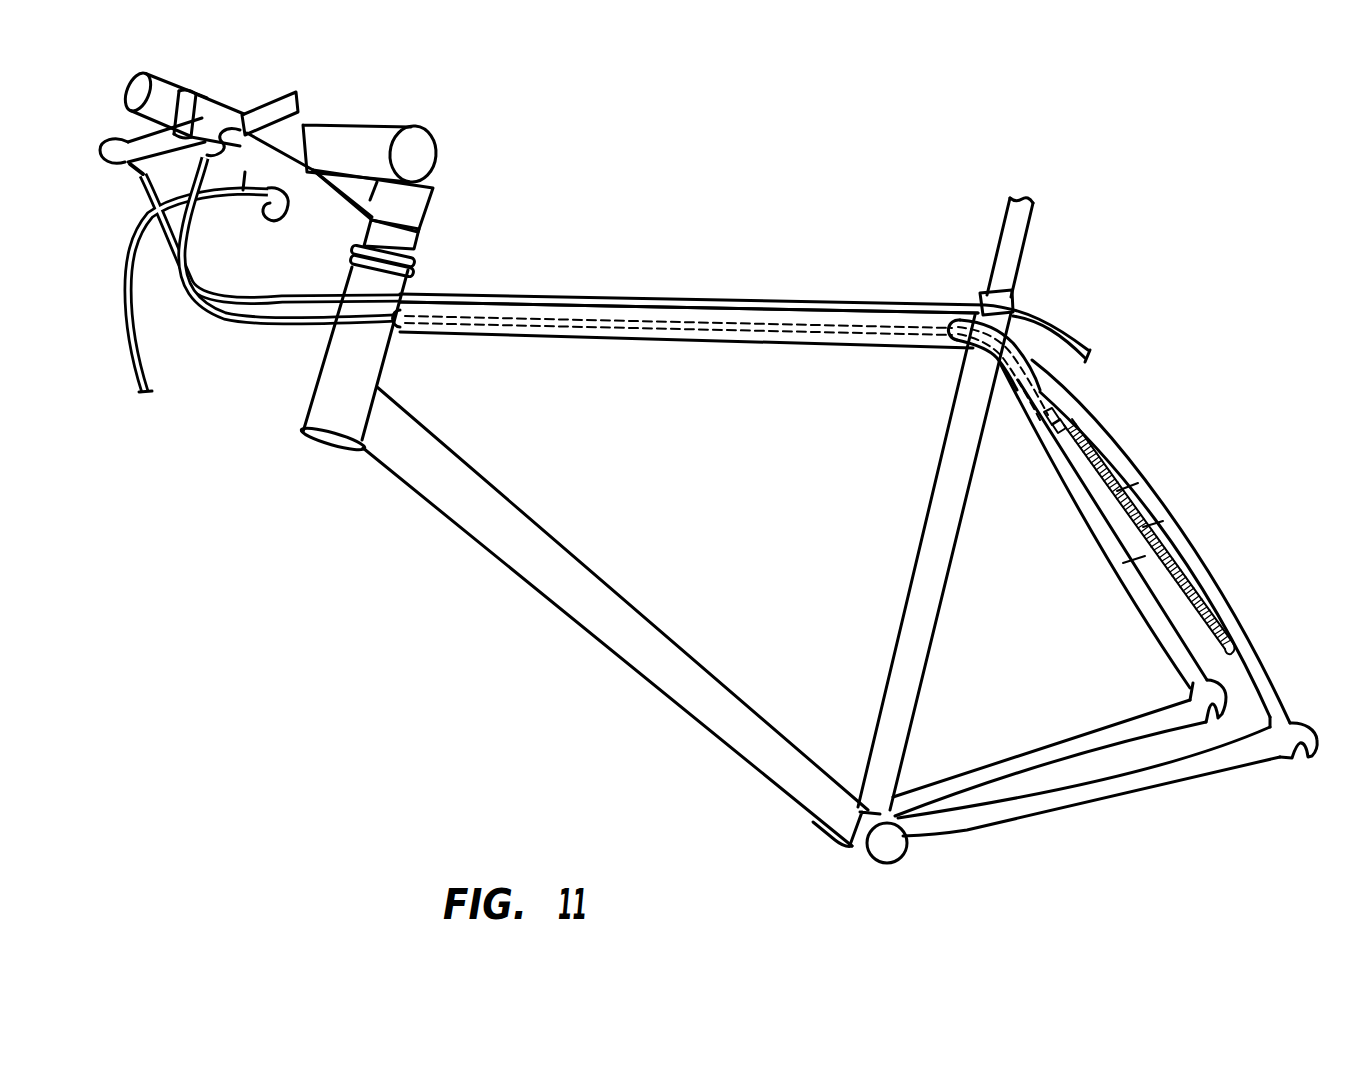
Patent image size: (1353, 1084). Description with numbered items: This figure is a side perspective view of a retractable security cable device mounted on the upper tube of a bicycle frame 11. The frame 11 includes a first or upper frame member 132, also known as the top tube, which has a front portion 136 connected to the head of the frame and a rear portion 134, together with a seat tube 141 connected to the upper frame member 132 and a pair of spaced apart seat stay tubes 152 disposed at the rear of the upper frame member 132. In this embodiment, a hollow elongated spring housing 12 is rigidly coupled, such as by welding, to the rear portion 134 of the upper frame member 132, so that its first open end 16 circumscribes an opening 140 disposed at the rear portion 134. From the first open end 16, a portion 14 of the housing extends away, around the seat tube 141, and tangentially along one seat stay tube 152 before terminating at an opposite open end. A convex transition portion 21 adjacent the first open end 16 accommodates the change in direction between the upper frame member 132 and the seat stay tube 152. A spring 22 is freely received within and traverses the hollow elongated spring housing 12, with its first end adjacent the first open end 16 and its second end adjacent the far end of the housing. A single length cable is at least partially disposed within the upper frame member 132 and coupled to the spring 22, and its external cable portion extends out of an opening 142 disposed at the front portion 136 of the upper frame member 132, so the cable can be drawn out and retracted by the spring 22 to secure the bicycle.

The bicycle frame 11 is at (346, 384).
The hollow elongated spring housing 12 is at (1081, 439).
The portion of the spring housing 14 is at (1120, 488).
The first open end 16 is at (955, 343).
The convex transition portion 21 is at (1008, 297).
The spring 22 is at (1143, 523).
The upper frame member 132 is at (598, 333).
The rear portion 134 is at (947, 362).
The front portion 136 is at (417, 351).
The opening 140 is at (955, 320).
The seat tube 141 is at (930, 553).
The opening 142 is at (433, 296).
The seat stay tube 152 is at (1187, 570).